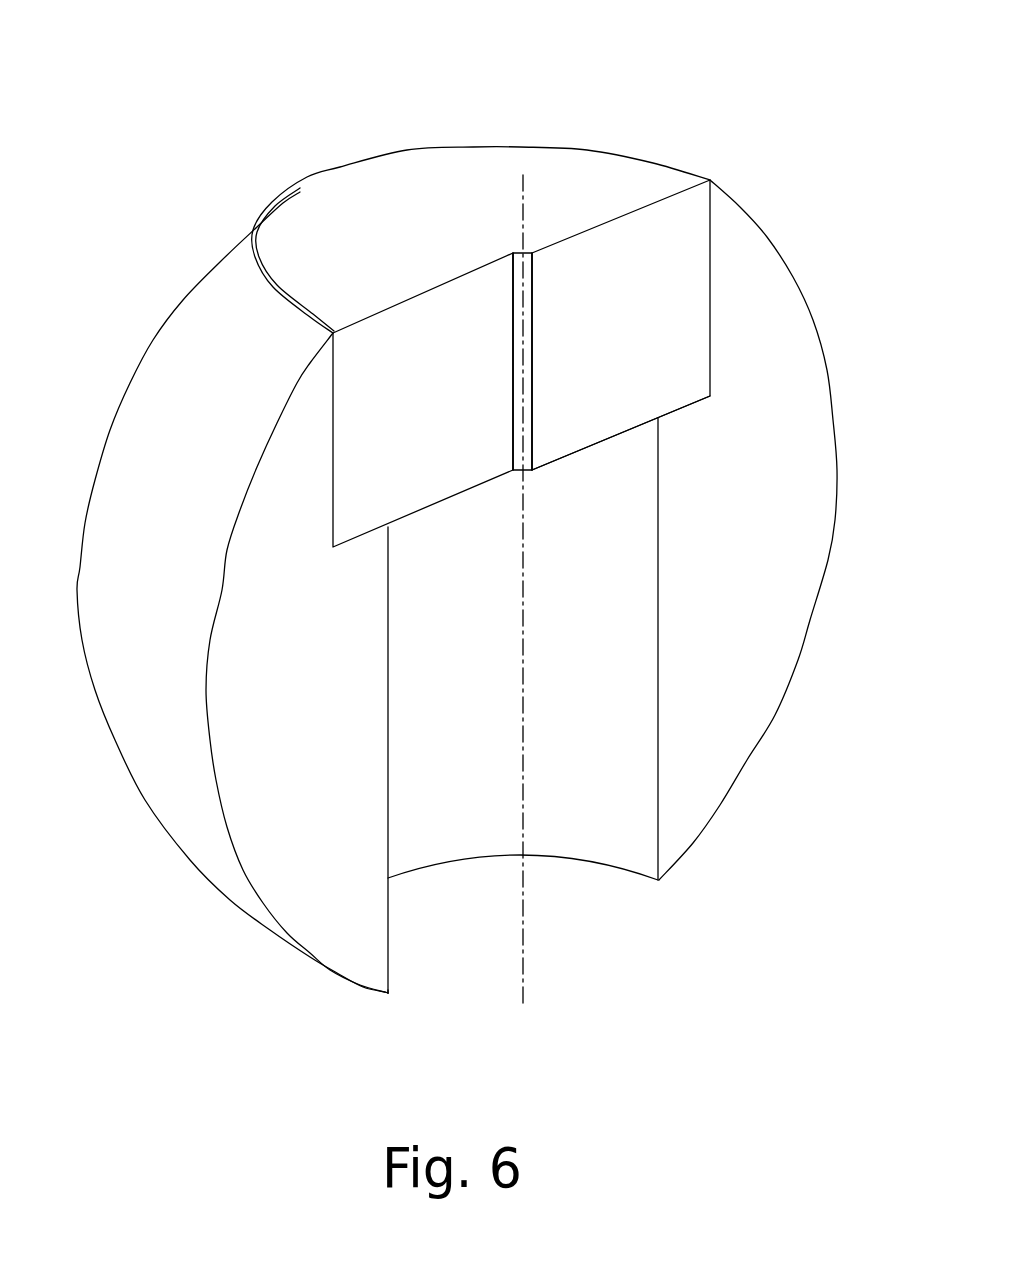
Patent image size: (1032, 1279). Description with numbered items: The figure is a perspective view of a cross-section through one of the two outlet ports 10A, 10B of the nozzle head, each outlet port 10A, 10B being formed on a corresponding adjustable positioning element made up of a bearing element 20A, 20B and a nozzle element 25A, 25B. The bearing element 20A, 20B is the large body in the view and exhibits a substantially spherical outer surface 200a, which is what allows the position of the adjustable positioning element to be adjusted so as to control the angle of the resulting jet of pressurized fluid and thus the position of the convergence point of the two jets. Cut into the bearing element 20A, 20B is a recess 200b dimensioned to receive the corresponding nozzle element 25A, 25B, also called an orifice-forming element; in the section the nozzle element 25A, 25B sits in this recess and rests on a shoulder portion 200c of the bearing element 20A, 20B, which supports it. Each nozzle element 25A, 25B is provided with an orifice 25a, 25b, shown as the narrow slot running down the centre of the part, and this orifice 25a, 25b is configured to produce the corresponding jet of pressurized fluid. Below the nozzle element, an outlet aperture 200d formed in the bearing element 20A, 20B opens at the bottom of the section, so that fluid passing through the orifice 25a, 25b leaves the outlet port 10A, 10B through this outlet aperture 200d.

The substantially spherical outer surface 200a is at (160, 357).
The recess 200b is at (712, 283).
The shoulder portion 200c is at (684, 396).
The outlet aperture 200d is at (603, 845).
The nozzle element 25A is at (582, 244).
The nozzle element 25B is at (512, 167).
The orifice 25a is at (436, 331).
The orifice 25b is at (512, 254).
The bearing element 20A is at (210, 667).
The bearing element 20B is at (165, 805).
The outlet port 10A is at (303, 1055).
The outlet port 10B is at (356, 1016).